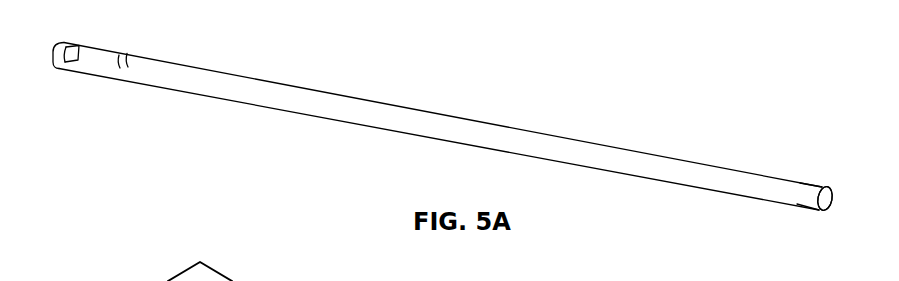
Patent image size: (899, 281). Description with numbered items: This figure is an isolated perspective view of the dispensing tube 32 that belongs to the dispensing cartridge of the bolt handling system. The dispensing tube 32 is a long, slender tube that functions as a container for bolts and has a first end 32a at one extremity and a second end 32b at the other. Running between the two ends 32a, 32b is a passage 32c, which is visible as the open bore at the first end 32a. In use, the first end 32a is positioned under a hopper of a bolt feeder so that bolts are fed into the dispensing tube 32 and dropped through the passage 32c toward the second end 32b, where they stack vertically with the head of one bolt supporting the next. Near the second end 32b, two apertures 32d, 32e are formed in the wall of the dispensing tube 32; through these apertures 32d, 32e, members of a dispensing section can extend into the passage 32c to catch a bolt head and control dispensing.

The dispensing tube 32 is at (705, 137).
The first end 32a is at (822, 215).
The second end 32b is at (57, 75).
The passage 32c is at (826, 199).
The aperture 32d is at (135, 52).
The aperture 32e is at (80, 35).